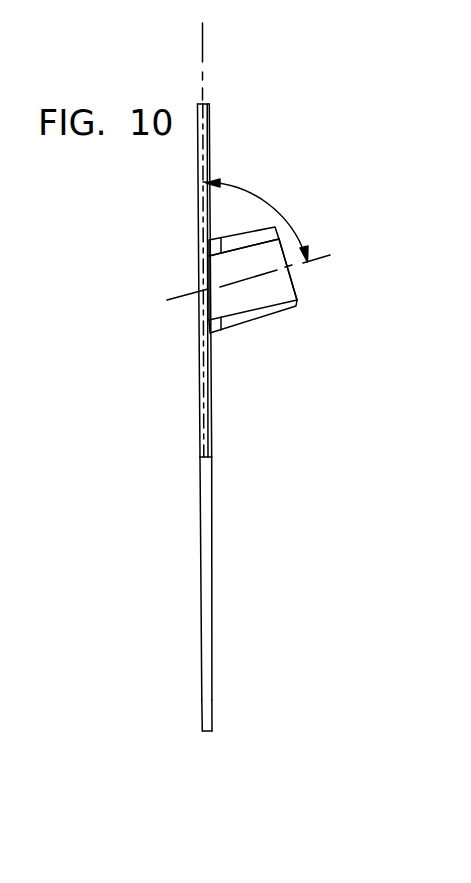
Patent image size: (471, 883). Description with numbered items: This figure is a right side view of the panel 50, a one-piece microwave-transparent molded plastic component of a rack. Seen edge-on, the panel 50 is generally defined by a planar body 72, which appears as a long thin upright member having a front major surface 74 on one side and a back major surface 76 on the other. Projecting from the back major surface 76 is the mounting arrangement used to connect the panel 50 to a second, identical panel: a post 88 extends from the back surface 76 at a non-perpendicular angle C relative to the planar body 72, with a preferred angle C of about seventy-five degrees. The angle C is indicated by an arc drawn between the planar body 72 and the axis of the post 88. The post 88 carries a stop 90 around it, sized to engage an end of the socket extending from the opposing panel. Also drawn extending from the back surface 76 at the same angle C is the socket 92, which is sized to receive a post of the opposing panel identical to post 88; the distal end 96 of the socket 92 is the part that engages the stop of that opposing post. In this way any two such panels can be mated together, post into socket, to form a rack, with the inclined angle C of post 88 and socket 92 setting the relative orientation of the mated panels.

The panel 50 is at (272, 130).
The back major surface 76 is at (198, 144).
The front major surface 74 is at (212, 617).
The planar body 72 is at (213, 712).
The distal end 96 is at (277, 229).
The post 88 is at (258, 308).
The socket 92 is at (297, 304).
The stop 90 is at (223, 325).
The angle C is at (261, 198).